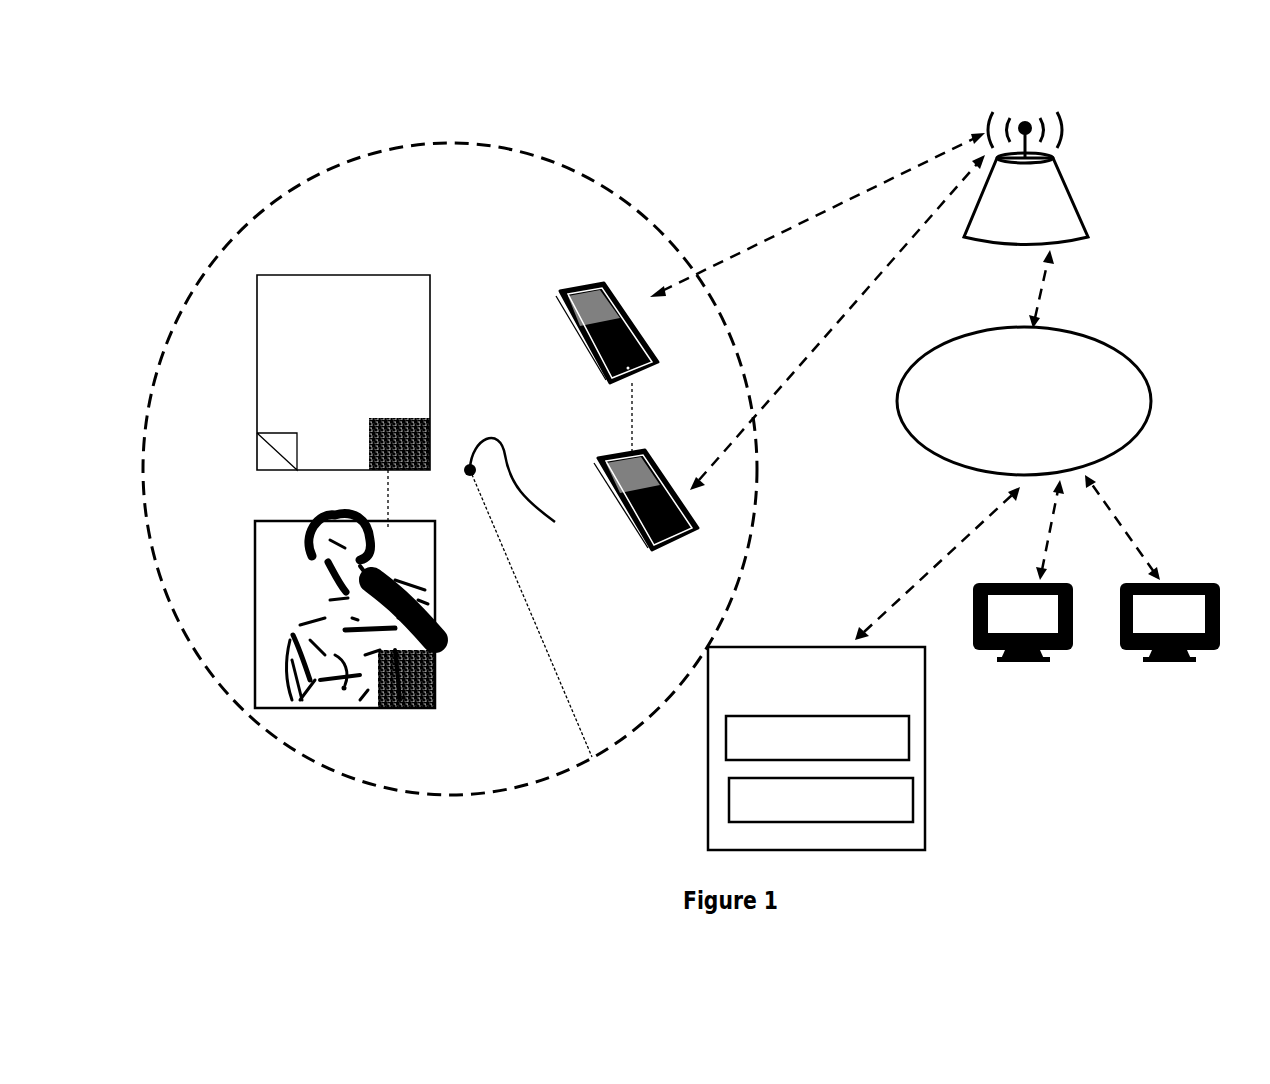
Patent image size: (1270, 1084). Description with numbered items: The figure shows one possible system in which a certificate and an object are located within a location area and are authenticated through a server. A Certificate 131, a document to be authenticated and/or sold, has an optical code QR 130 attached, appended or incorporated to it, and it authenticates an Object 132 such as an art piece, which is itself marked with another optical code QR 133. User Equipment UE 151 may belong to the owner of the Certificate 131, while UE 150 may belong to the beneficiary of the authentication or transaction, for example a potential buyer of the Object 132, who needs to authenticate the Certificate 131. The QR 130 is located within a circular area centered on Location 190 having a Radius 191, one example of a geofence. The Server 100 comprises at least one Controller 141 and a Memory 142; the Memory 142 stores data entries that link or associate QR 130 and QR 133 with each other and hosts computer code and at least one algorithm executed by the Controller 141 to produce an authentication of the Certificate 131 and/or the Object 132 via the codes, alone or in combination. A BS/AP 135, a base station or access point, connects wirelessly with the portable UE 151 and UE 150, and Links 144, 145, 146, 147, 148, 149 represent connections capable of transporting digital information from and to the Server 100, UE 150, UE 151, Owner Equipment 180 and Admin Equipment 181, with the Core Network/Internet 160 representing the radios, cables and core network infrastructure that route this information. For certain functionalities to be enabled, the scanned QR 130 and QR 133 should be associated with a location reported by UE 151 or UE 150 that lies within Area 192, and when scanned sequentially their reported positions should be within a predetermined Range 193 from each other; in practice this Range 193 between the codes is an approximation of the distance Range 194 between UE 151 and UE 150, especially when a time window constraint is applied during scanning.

The server 100 is at (817, 647).
The QR code 130 is at (427, 435).
The certificate 131 is at (417, 278).
The object 132 is at (418, 592).
The QR code 133 is at (435, 700).
The BS/AP 135 is at (1026, 178).
The controller 141 is at (726, 733).
The memory 142 is at (729, 797).
The link 144 is at (810, 208).
The link 145 is at (1140, 522).
The link 146 is at (935, 567).
The link 147 is at (1057, 513).
The link 148 is at (1043, 298).
The link 149 is at (875, 265).
The user equipment 150 is at (657, 460).
The user equipment 151 is at (583, 287).
The core network/Internet 160 is at (1120, 345).
The owner equipment 180 is at (1033, 663).
The admin equipment 181 is at (1168, 663).
The location 190 is at (530, 490).
The radius 191 is at (563, 678).
The area 192 is at (653, 238).
The range 193 is at (387, 503).
The range 194 is at (632, 417).